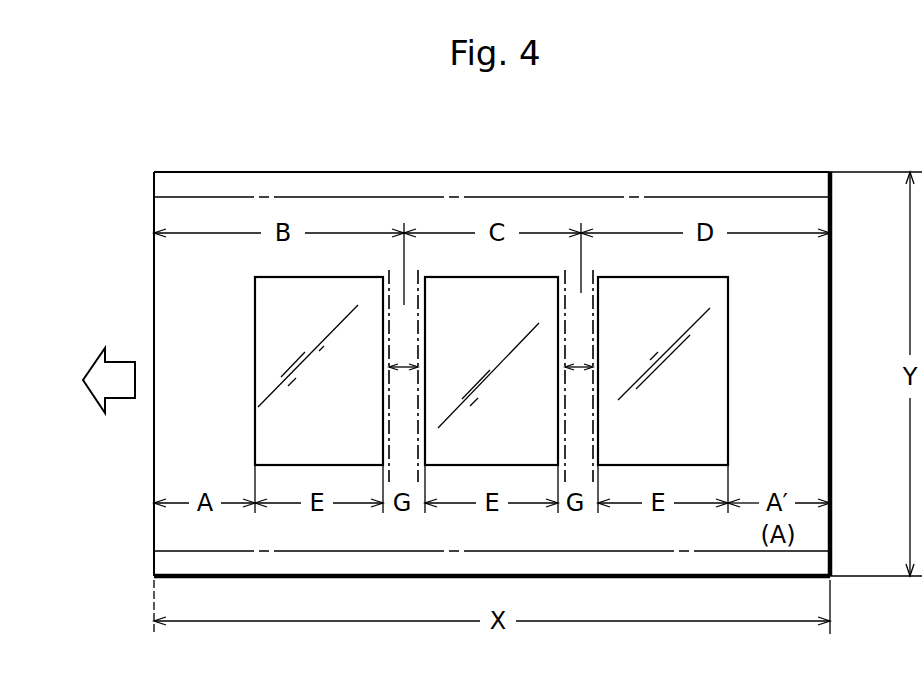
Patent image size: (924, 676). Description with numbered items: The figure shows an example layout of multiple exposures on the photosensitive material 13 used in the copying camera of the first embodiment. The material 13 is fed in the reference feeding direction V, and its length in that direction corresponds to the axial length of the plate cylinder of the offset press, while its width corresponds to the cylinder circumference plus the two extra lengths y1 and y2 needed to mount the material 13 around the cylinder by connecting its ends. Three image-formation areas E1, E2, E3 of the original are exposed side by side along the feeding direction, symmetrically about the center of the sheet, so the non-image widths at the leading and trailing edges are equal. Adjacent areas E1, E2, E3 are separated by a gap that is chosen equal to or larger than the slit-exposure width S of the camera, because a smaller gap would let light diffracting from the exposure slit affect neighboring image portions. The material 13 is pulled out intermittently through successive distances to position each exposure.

The photosensitive material 13 is at (312, 172).
The mounting length y1 is at (706, 184).
The mounting length y2 is at (686, 565).
The image-formation area E1 is at (347, 423).
The image-formation area E2 is at (463, 423).
The image-formation area E3 is at (628, 423).
The slit-exposure width S is at (580, 366).
The feeding direction V is at (122, 366).